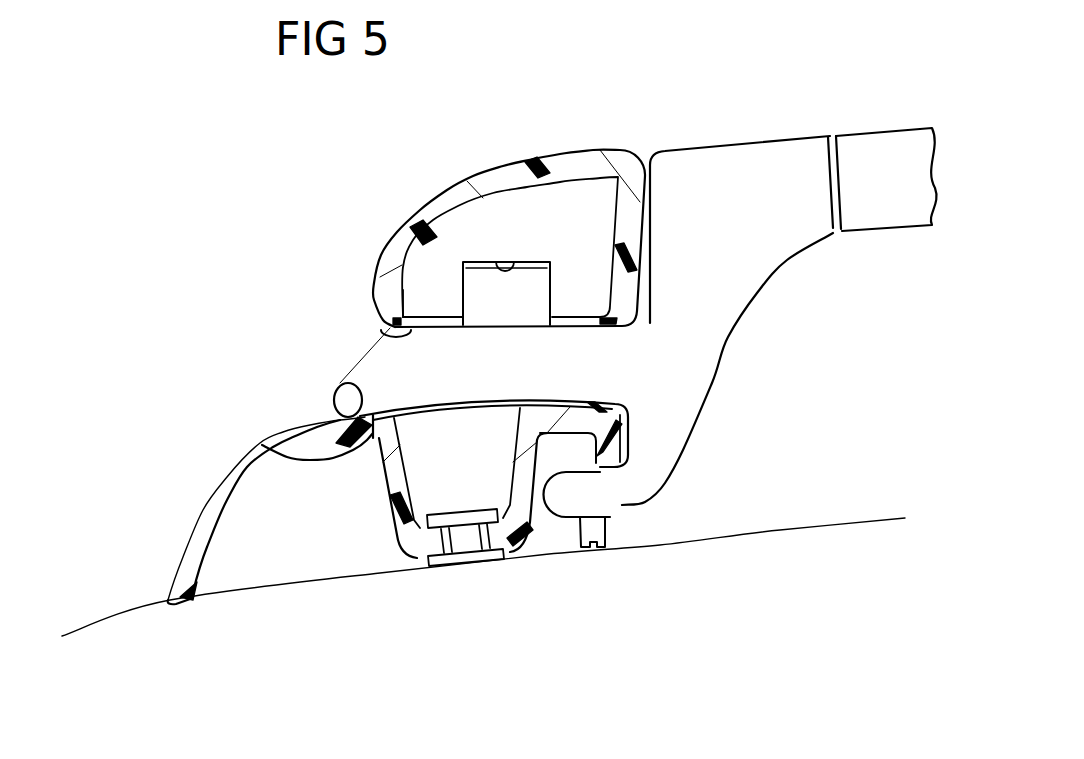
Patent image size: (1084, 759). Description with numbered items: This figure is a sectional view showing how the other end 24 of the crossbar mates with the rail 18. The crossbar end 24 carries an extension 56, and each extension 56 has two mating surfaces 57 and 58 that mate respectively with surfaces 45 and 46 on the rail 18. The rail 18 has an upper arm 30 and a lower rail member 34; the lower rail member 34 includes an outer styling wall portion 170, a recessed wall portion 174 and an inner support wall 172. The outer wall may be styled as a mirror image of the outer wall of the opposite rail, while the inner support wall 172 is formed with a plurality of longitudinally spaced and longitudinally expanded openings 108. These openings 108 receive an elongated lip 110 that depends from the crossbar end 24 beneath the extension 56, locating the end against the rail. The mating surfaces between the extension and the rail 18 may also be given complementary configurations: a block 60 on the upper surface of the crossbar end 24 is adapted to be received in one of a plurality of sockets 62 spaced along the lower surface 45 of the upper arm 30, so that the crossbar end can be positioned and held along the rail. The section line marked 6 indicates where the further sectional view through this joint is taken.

The rail 18 is at (504, 87).
The other end of the crossbar 24 is at (770, 134).
The upper arm 30 is at (547, 142).
The lower rail member 34 is at (152, 557).
The surface 45 is at (392, 331).
The surface 46 is at (334, 388).
The extension 56 is at (462, 351).
The mating surface 57 is at (437, 317).
The mating surface 58 is at (262, 445).
The block 60 is at (477, 273).
The sockets 62 is at (495, 262).
The openings 108 is at (600, 473).
The elongated lip 110 is at (620, 503).
The outer styling wall portion 170 is at (217, 537).
The inner support wall 172 is at (600, 532).
The recessed wall portion 174 is at (507, 550).
The section line 6- 6 is at (649, 142).